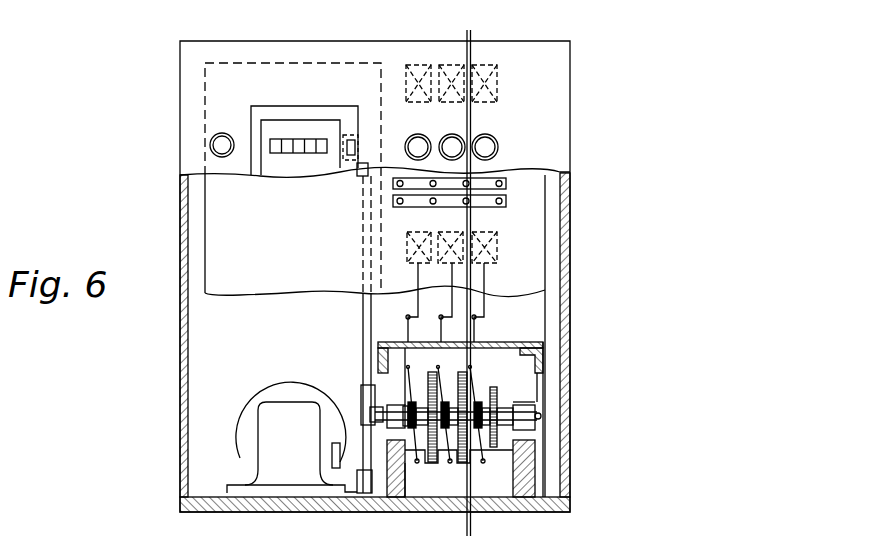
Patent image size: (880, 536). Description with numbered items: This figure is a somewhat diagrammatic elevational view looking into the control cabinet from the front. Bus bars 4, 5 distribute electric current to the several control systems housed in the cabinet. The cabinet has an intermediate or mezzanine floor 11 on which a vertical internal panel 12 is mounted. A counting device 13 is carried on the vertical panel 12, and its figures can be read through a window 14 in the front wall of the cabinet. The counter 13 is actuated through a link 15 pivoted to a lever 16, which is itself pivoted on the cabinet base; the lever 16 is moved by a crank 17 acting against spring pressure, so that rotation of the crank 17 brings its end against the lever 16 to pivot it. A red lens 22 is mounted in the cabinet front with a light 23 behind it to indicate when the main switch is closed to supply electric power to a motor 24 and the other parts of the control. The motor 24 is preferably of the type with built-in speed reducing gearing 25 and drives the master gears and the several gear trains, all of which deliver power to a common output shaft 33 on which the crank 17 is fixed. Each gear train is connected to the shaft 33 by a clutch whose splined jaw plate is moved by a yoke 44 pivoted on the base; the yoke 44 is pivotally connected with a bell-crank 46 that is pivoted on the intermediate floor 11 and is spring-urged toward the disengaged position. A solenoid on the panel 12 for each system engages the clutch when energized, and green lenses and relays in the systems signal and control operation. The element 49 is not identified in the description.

The bus bar 4 is at (507, 184).
The bus bar 5 is at (507, 202).
The intermediate floor 11 is at (518, 343).
The vertical internal panel 12 is at (542, 310).
The counting device 13 is at (288, 154).
The window 14 is at (320, 128).
The link 15 is at (356, 174).
The lever 16 is at (362, 312).
The crank 17 is at (361, 392).
The red lens 22 is at (222, 140).
The light 23 is at (342, 455).
The motor 24 is at (257, 397).
The speed reducing gearing 25 is at (275, 457).
The output shaft 33 is at (545, 417).
The yoke 44 is at (406, 403).
The bell-crank 46 is at (406, 319).
The support 49 is at (402, 490).